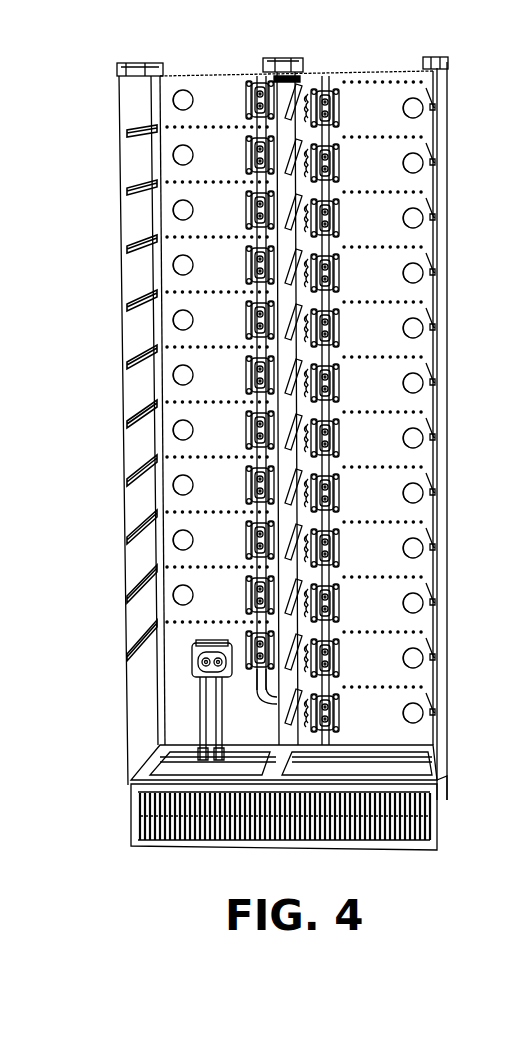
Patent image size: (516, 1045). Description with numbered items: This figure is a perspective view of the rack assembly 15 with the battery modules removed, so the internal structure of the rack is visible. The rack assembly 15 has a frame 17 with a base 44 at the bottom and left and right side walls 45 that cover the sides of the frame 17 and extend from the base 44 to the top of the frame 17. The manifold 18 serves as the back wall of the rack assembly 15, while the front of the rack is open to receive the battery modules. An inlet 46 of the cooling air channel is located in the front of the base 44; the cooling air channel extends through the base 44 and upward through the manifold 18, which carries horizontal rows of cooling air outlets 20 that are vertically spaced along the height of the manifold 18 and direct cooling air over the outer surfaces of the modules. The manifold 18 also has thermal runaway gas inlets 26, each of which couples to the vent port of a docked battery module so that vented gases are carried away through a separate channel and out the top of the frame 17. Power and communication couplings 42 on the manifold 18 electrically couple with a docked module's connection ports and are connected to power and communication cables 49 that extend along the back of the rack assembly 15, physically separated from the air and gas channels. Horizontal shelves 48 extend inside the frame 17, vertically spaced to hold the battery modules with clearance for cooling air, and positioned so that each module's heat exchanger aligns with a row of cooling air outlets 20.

The rack assembly 15 is at (118, 212).
The frame 17 is at (160, 92).
The manifold 18 is at (370, 100).
The cooling air outlets 20 is at (392, 524).
The thermal runaway gas inlets 26 is at (420, 393).
The power and communication couplings 42 is at (340, 446).
The base 44 is at (445, 826).
The side walls 45 is at (123, 456).
The inlet 46 is at (140, 823).
The horizontal shelves 48 is at (432, 604).
The power and communication cables 49 is at (358, 622).